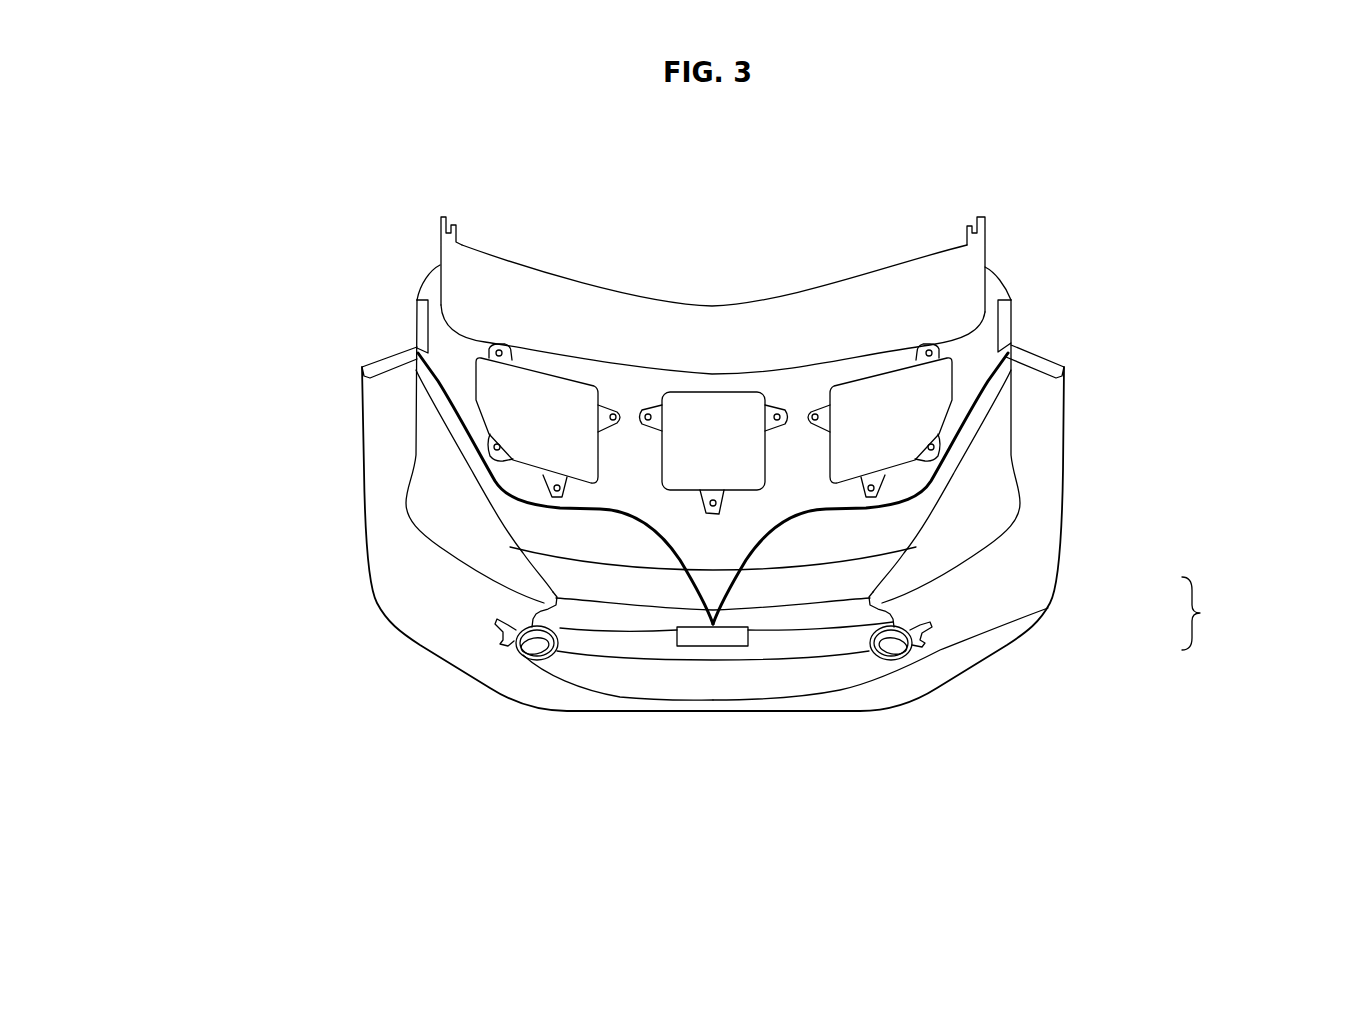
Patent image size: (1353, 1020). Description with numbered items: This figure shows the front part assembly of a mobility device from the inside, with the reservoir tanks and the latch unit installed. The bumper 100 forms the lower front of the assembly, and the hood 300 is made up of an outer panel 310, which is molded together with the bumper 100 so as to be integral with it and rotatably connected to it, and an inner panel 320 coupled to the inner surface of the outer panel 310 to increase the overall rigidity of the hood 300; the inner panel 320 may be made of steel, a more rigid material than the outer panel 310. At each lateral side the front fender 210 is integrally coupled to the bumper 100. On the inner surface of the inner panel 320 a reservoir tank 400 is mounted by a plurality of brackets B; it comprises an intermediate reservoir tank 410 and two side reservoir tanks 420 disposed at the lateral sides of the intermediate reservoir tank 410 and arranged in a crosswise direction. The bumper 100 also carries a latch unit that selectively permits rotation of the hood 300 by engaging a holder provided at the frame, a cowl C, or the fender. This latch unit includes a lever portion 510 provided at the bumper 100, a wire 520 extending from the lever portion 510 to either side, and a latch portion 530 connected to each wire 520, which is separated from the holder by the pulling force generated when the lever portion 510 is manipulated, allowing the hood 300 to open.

The bumper 100 is at (953, 635).
The front fender 210 is at (380, 422).
The hood 300 is at (1217, 613).
The outer panel 310 is at (862, 573).
The inner panel 320 is at (892, 522).
The reservoir tank 400 is at (714, 319).
The intermediate reservoir tank 410 is at (710, 427).
The side reservoir tank 420 is at (828, 182).
The lever portion 510 is at (715, 640).
The wire 520 is at (952, 462).
The latch portion 530 is at (422, 316).
The bracket B is at (507, 345).
The cowl C is at (557, 313).